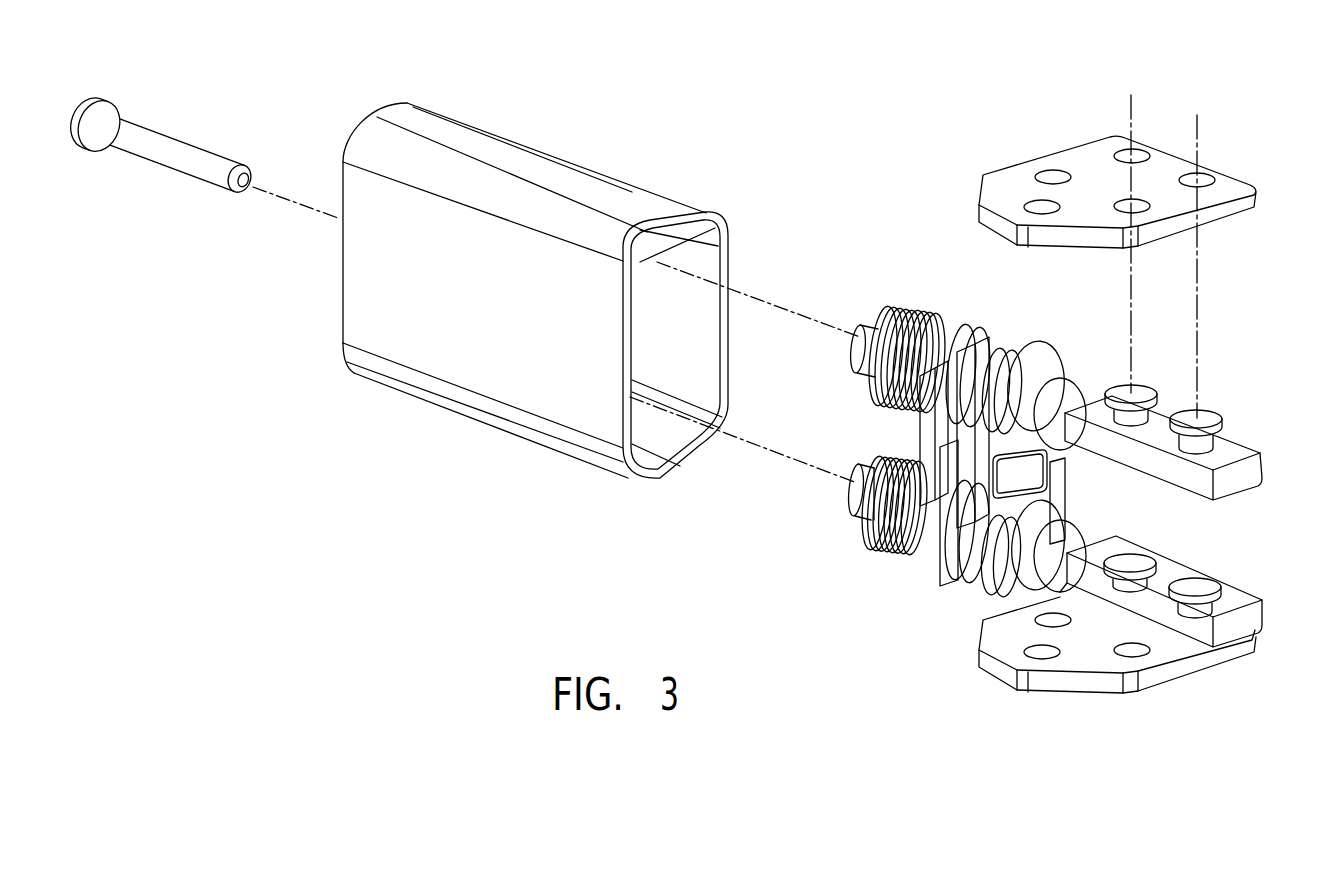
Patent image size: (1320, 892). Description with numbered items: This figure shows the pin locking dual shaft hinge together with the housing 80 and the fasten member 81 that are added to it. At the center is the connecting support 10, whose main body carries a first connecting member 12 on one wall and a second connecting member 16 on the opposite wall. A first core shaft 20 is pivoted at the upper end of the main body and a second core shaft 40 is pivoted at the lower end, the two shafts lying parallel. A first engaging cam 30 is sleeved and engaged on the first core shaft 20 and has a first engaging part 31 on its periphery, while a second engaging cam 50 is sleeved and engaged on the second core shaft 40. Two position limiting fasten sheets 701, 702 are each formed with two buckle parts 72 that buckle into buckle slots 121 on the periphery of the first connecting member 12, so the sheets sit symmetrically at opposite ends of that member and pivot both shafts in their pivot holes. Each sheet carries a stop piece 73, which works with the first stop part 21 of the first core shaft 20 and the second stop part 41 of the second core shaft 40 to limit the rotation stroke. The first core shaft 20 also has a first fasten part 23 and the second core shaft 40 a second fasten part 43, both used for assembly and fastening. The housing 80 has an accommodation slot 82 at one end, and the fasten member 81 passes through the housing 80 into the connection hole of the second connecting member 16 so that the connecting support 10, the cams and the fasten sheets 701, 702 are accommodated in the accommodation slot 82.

The connecting support 10 is at (963, 463).
The first connecting member 12 is at (1030, 471).
The second connecting member 16 is at (897, 438).
The first core shaft 20 is at (1169, 375).
The first stop part 21 is at (1003, 370).
The first fasten part 23 is at (1079, 387).
The first engaging cam 30 is at (957, 355).
The first engaging part 31 is at (989, 340).
The second core shaft 40 is at (1221, 684).
The second stop part 41 is at (1063, 553).
The second fasten part 43 is at (1067, 583).
The second engaging cam 50 is at (937, 578).
The buckle parts 72 is at (892, 526).
The stop piece 73 is at (960, 600).
The housing 80 is at (636, 174).
The fasten member 81 is at (167, 143).
The accommodation slot 82 is at (690, 248).
The buckle slots 121 is at (923, 550).
The position limiting fasten sheet 701 is at (1058, 350).
The position limiting fasten sheet 702 is at (1066, 513).